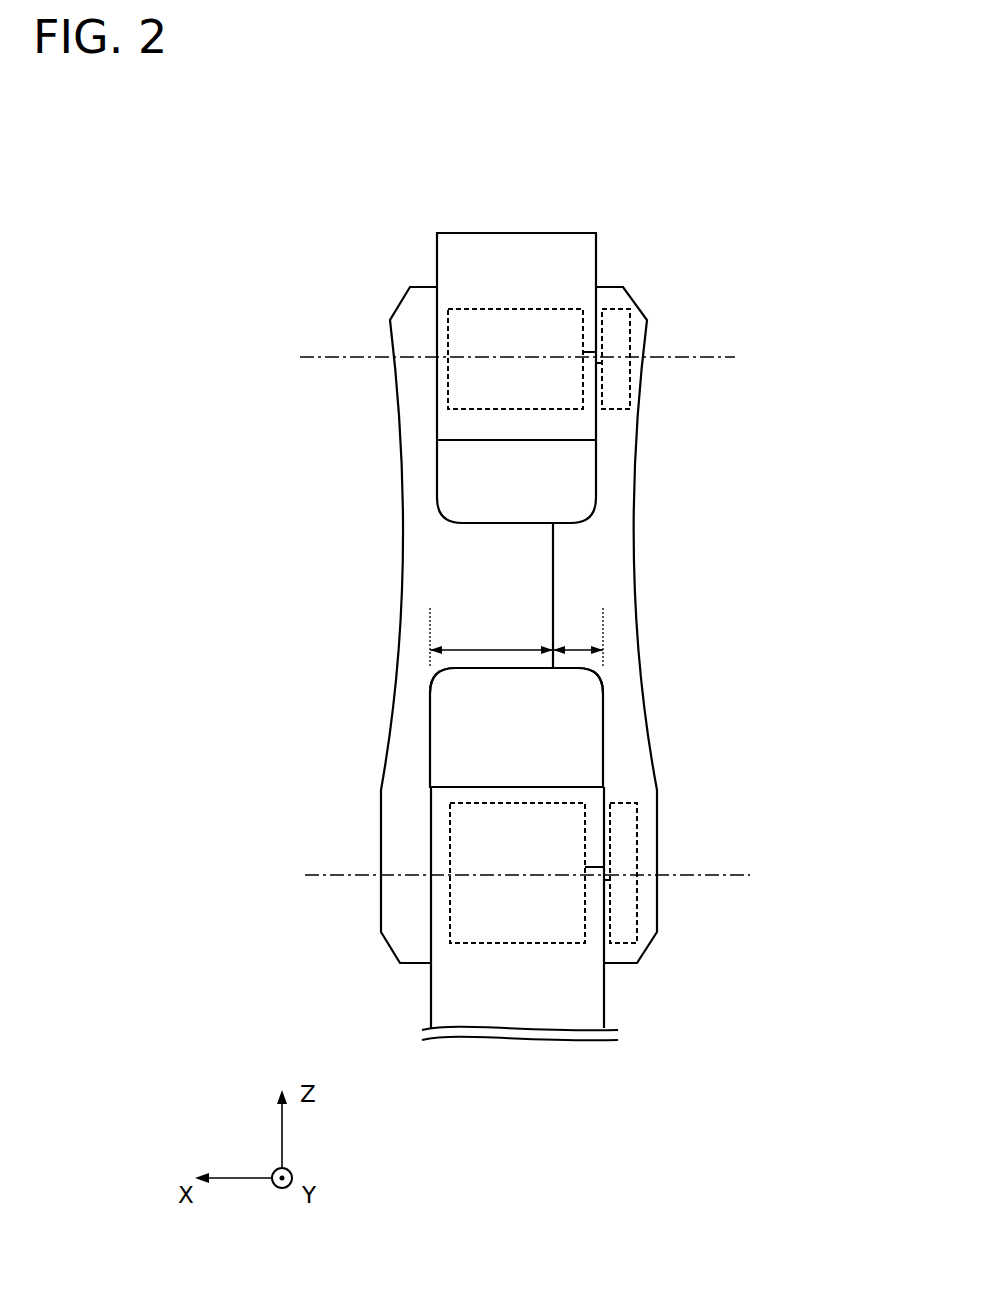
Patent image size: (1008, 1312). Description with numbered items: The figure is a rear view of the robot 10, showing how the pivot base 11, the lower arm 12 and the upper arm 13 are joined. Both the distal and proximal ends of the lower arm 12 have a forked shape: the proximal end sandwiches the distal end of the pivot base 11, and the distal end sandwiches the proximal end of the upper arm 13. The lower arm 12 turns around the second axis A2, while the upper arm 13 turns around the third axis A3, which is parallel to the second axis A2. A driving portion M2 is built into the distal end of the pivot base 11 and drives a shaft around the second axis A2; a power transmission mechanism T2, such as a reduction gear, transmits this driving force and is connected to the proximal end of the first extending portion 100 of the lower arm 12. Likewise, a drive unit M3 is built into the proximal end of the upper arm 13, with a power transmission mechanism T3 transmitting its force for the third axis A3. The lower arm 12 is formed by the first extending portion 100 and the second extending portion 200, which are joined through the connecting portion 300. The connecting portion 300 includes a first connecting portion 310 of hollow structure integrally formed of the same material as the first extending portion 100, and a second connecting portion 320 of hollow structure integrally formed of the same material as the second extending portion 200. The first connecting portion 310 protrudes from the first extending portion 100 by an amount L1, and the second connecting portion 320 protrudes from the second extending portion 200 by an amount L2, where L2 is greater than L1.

The robot 10 is at (812, 216).
The pivot base 11 is at (468, 960).
The lower arm 12 is at (787, 548).
The upper arm 13 is at (519, 250).
The first extending portion 100 is at (617, 472).
The second extending portion 200 is at (417, 475).
The connecting portion 300 is at (714, 727).
The first connecting portion 310 is at (576, 682).
The second connecting portion 320 is at (491, 684).
The drive unit M3 is at (517, 410).
The power transmission mechanism T3 is at (618, 410).
The driving portion M2 is at (515, 943).
The power transmission mechanism T2 is at (623, 943).
The third axis A3 is at (687, 357).
The second axis A2 is at (705, 875).
The amount of protrusion of the first connecting portion L1 is at (578, 638).
The amount of protrusion of the second connecting portion L2 is at (491, 638).